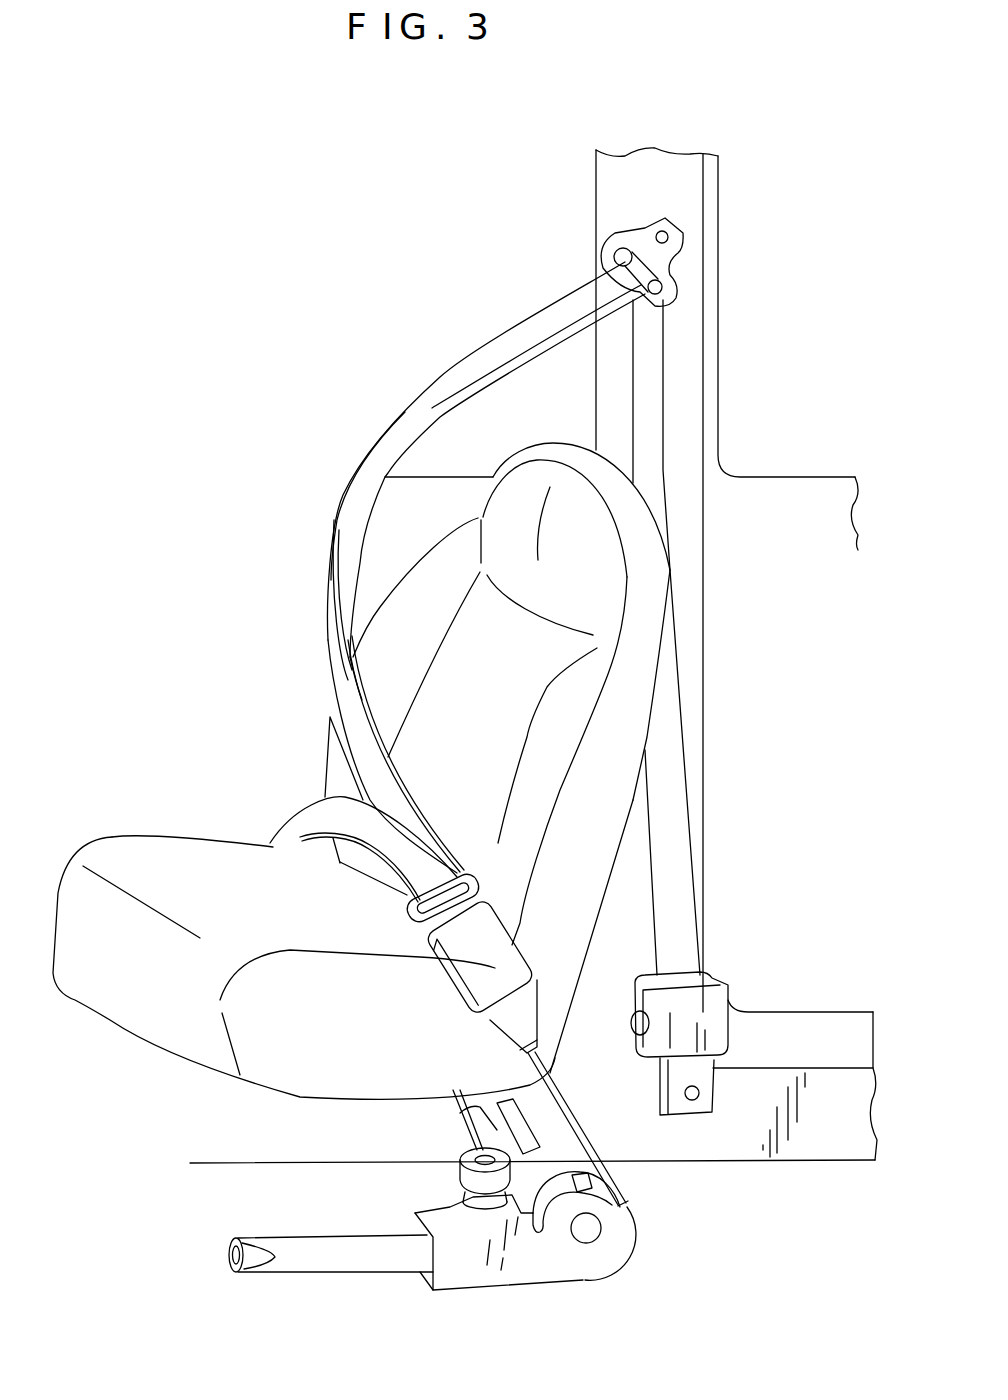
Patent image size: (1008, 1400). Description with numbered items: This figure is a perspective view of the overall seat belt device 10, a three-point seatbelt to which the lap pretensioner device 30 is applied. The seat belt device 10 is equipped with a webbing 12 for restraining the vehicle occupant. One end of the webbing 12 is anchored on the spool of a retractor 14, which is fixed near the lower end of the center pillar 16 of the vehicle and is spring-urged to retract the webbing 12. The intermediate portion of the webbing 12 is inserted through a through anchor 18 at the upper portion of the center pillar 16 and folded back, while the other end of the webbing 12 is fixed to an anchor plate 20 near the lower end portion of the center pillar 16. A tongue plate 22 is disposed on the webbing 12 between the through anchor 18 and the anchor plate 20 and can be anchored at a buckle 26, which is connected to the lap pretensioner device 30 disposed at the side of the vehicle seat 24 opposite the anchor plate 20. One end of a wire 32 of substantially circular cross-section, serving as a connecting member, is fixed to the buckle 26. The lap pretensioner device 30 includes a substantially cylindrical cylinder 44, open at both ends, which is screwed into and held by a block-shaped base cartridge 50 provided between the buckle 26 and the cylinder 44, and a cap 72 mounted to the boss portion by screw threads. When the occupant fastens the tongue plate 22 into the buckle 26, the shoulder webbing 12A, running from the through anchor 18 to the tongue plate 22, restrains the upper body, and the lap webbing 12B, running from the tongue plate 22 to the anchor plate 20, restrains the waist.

The seat belt device 10 is at (322, 366).
The webbing 12 is at (523, 306).
The shoulder webbing 12A is at (447, 388).
The lap webbing 12B is at (313, 812).
The retractor 14 is at (712, 978).
The center pillar 16 is at (697, 358).
The through anchor 18 is at (664, 255).
The anchor plate 20 is at (478, 1122).
The tongue plate 22 is at (468, 870).
The vehicle seat 24 is at (140, 1047).
The buckle 26 is at (482, 980).
The lap pretensioner device 30 is at (507, 1302).
The wire 32 is at (557, 1090).
The cylinder 44 is at (383, 1263).
The base cartridge 50 is at (570, 1267).
The cap 72 is at (458, 1178).